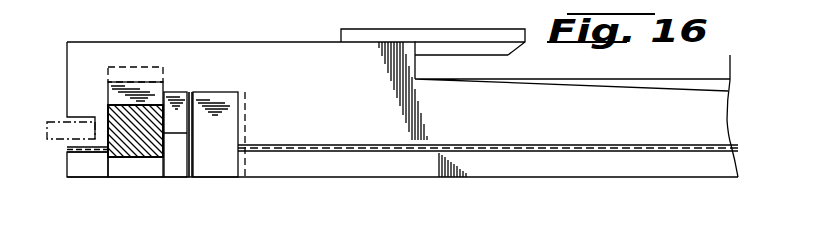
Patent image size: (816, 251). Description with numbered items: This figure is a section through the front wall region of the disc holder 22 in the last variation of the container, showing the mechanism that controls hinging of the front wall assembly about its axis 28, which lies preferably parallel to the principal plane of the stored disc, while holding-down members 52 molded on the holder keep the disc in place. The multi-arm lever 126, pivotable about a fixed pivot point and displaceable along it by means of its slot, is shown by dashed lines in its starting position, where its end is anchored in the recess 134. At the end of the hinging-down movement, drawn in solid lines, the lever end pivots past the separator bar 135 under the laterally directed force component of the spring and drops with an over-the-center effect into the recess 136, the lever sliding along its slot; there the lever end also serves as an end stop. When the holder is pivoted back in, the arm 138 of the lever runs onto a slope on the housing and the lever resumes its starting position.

The disc holder 22 is at (568, 180).
The axis 28 is at (380, 150).
The holding-down members 52 is at (497, 36).
The multi-arm lever 126 is at (131, 162).
The recess 134 is at (228, 172).
The separator bar 135 is at (173, 163).
The recess 136 is at (108, 100).
The arm 138 is at (55, 140).